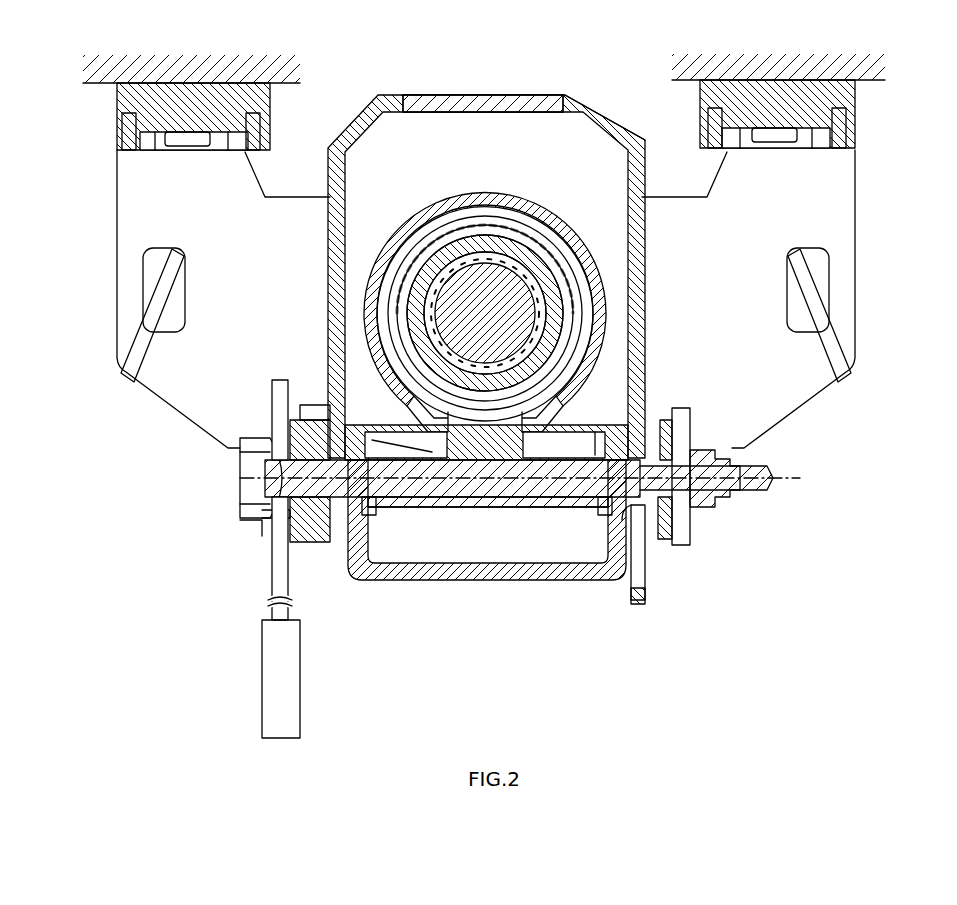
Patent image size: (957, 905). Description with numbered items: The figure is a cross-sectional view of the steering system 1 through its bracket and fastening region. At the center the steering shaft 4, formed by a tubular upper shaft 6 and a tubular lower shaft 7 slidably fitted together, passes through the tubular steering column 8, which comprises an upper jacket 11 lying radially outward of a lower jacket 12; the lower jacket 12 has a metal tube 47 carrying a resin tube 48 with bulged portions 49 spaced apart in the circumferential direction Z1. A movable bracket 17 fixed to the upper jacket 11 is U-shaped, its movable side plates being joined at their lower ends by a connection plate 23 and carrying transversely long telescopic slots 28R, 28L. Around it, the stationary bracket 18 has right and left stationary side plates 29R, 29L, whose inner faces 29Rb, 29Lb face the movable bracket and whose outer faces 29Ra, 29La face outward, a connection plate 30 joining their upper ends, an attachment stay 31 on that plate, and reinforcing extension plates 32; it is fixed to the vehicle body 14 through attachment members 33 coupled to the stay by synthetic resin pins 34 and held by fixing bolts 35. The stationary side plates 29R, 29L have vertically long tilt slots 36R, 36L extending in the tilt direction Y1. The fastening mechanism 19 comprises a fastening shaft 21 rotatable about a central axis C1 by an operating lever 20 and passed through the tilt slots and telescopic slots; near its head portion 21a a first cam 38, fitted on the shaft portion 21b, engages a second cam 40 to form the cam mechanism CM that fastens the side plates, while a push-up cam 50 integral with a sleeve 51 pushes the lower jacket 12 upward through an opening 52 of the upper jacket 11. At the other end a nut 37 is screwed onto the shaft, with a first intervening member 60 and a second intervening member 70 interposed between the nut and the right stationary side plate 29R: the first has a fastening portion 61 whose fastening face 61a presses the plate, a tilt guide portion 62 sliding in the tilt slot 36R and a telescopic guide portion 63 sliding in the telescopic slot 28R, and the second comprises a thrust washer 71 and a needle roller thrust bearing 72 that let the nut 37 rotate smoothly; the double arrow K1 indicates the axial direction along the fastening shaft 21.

The steering system 1 is at (895, 170).
The steering shaft 4 is at (502, 245).
The upper shaft 6 is at (522, 262).
The lower shaft 7 is at (530, 282).
The steering column 8 is at (487, 192).
The upper jacket 11 is at (405, 258).
The lower jacket 12 is at (468, 165).
The vehicle body 14 is at (176, 70).
The movable bracket 17 is at (632, 340).
The stationary bracket 18 is at (650, 217).
The fastening mechanism 19 is at (240, 532).
The operating lever 20 is at (275, 680).
The fastening shaft 21 is at (245, 480).
The head portion 21a is at (258, 514).
The shaft portion 21b is at (442, 492).
The connection plate 23 is at (412, 585).
The left telescopic slot 28L is at (368, 516).
The right telescopic slot 28R is at (607, 516).
The left stationary side plate 29L is at (338, 254).
The outer face of left stationary side plate 29La is at (330, 226).
The inner face of left stationary side plate 29Lb is at (345, 300).
The right stationary side plate 29R is at (648, 255).
The outer face of right stationary side plate 29Ra is at (648, 231).
The inner face of right stationary side plate 29Rb is at (650, 276).
The connection plate 30 is at (486, 102).
The attachment stay 31 is at (620, 104).
The reinforcing extension plate 32 is at (125, 208).
The attachment member 33 is at (122, 104).
The synthetic resin pin 34 is at (262, 118).
The fixing bolt 35 is at (190, 146).
The left tilt slot 36L is at (335, 385).
The right tilt slot 36R is at (632, 386).
The nut 37 is at (712, 500).
The first cam 38 is at (282, 548).
The second cam 40 is at (305, 548).
The metal tube 47 is at (425, 232).
The resin tube 48 is at (452, 232).
The bulged portion 49 is at (396, 245).
The push-up cam 50 is at (476, 438).
The sleeve 51 is at (518, 508).
The opening 52 is at (402, 431).
The first intervening member 60 is at (650, 552).
The fastening portion 61 is at (660, 538).
The fastening face 61a is at (638, 600).
The tilt guide portion 62 is at (596, 436).
The telescopic guide portion 63 is at (605, 438).
The second intervening member 70 is at (832, 410).
The thrust washer 71 is at (690, 425).
The needle roller thrust bearing 72 is at (672, 442).
The cam mechanism CM is at (208, 562).
The central axis C1 is at (782, 482).
The axial direction K1 is at (892, 478).
The tilt direction Y1 is at (488, 640).
The circumferential direction Z1 is at (610, 260).